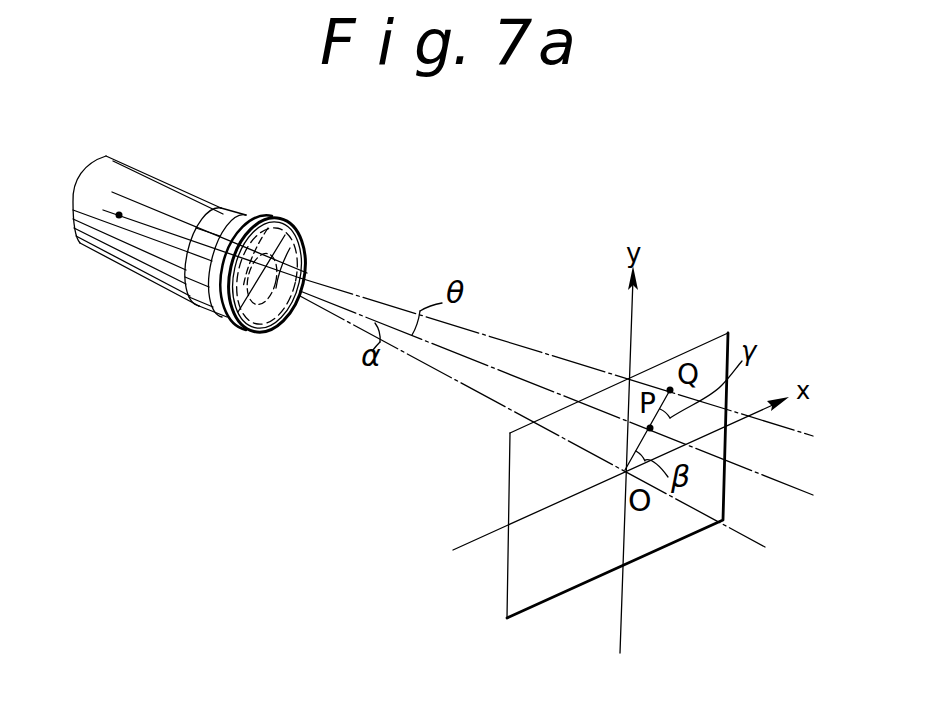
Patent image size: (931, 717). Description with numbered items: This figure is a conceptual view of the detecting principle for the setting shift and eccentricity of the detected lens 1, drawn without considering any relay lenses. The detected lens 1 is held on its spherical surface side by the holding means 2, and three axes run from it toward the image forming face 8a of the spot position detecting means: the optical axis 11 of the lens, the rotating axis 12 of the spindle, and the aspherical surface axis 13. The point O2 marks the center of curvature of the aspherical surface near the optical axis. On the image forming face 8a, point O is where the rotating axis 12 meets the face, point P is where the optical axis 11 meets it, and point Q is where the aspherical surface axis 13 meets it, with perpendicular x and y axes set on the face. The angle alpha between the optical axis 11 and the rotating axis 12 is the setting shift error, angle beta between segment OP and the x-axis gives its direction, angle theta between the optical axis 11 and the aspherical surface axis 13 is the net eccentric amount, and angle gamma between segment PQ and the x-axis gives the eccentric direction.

The detected lens 1 is at (290, 226).
The holding means 2 is at (242, 215).
The center of curvature of the aspherical surface O2 is at (118, 218).
The image forming face 8a is at (563, 580).
The optical axis 11 is at (790, 485).
The rotating axis 12 is at (750, 536).
The aspherical surface axis 13 is at (800, 426).